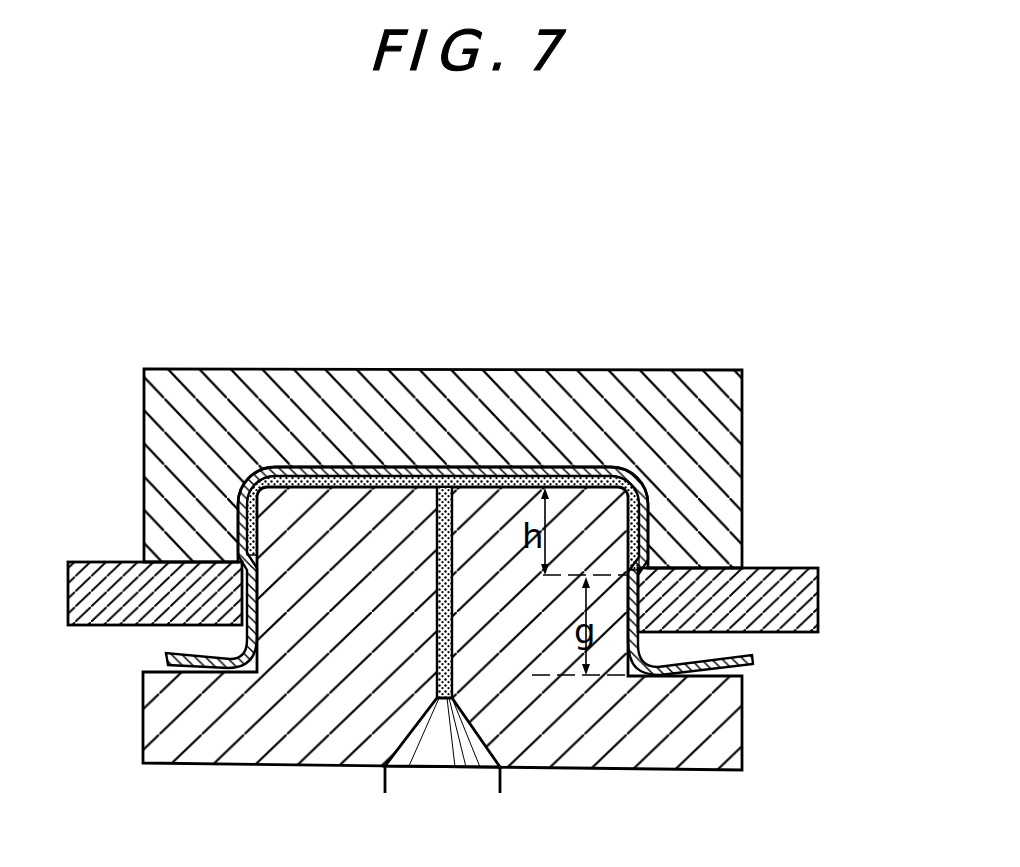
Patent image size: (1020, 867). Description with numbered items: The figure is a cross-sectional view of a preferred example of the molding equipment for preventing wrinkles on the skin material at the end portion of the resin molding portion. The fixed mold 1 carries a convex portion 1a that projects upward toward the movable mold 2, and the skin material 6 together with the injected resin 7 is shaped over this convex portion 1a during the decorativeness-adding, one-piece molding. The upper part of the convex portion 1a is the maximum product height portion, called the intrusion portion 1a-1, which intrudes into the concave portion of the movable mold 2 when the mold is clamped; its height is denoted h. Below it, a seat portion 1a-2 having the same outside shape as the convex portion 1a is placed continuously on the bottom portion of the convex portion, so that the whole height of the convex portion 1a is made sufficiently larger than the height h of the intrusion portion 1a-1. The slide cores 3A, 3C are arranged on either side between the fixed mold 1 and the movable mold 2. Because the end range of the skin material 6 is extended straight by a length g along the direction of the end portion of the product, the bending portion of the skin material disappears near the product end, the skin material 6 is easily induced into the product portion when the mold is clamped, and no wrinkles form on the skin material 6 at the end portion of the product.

The fixed mold 1 is at (665, 757).
The convex portion 1a is at (459, 457).
The intrusion portion 1a-1 is at (513, 532).
The seat portion 1a-2 is at (600, 613).
The movable mold 2 is at (683, 398).
The slide core 3A is at (772, 588).
The slide core 3C is at (110, 562).
The skin material 6 is at (243, 470).
The resin 7 is at (323, 467).